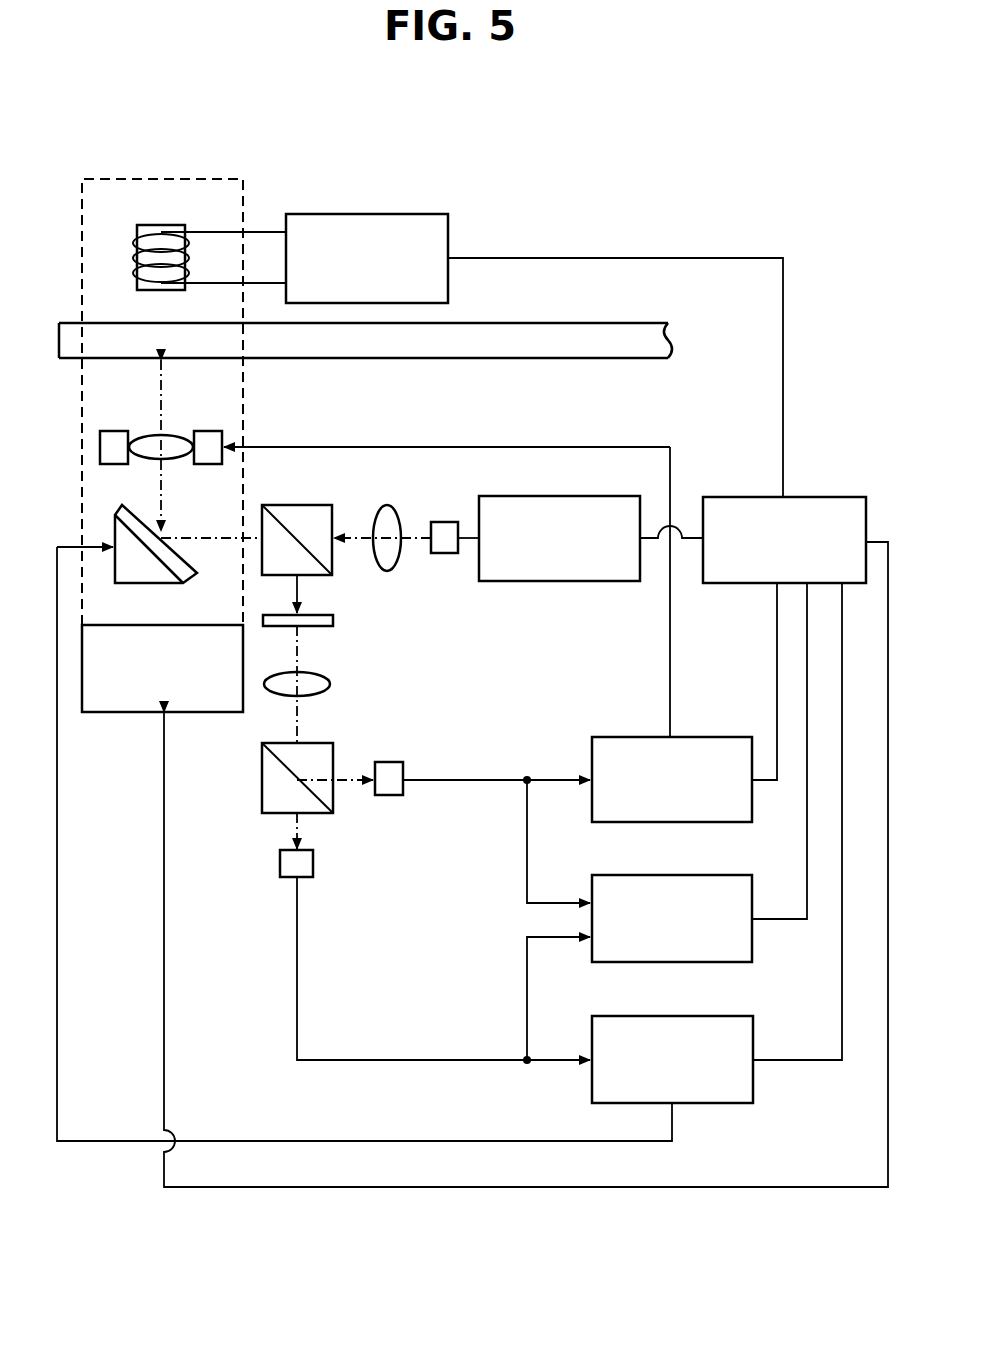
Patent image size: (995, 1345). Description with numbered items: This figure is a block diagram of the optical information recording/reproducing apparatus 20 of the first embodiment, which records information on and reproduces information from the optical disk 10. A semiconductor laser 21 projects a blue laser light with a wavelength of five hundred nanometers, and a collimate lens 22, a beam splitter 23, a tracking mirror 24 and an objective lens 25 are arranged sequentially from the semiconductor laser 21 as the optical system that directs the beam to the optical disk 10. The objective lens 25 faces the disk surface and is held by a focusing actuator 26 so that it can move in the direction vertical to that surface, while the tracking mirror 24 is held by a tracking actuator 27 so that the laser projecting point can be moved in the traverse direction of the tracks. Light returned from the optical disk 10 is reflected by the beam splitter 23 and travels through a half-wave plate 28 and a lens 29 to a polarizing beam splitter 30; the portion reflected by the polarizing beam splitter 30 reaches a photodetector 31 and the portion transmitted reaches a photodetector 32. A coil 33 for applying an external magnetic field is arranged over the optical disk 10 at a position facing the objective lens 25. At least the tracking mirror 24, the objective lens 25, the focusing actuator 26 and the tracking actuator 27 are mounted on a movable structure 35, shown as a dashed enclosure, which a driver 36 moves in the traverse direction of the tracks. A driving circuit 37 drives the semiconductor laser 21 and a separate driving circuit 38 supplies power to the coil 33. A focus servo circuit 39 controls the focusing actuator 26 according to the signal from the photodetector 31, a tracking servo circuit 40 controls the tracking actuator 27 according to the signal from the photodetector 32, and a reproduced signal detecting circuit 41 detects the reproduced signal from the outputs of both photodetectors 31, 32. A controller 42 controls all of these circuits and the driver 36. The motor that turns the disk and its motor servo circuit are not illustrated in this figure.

The optical disk 10 is at (530, 323).
The optical information recording/reproducing apparatus 20 is at (566, 222).
The semiconductor laser 21 is at (444, 522).
The collimate lens 22 is at (389, 506).
The beam splitter 23 is at (314, 508).
The tracking mirror 24 is at (130, 520).
The objective lens 25 is at (178, 444).
The focusing actuator 26 is at (110, 431).
The tracking actuator 27 is at (127, 580).
The half-wave plate 28 is at (312, 615).
The lens 29 is at (308, 674).
The polarizing beam splitter 30 is at (310, 743).
The photodetector 31 is at (383, 762).
The photodetector 32 is at (313, 862).
The coil 33 is at (165, 225).
The movable structure 35 is at (217, 178).
The driver 36 is at (213, 625).
The driving circuit 37 is at (615, 496).
The driving circuit 38 is at (418, 214).
The focus servo circuit 39 is at (725, 737).
The tracking servo circuit 40 is at (725, 1016).
The reproduced signal detecting circuit 41 is at (725, 875).
The controller 42 is at (840, 497).